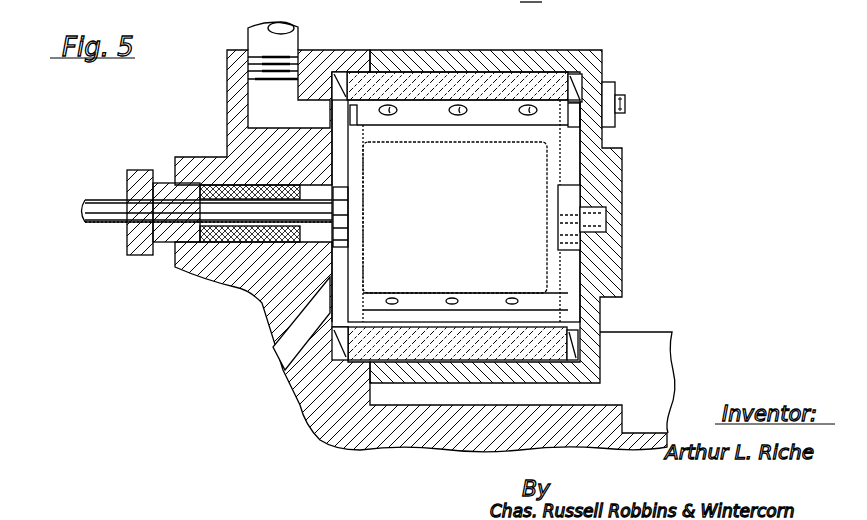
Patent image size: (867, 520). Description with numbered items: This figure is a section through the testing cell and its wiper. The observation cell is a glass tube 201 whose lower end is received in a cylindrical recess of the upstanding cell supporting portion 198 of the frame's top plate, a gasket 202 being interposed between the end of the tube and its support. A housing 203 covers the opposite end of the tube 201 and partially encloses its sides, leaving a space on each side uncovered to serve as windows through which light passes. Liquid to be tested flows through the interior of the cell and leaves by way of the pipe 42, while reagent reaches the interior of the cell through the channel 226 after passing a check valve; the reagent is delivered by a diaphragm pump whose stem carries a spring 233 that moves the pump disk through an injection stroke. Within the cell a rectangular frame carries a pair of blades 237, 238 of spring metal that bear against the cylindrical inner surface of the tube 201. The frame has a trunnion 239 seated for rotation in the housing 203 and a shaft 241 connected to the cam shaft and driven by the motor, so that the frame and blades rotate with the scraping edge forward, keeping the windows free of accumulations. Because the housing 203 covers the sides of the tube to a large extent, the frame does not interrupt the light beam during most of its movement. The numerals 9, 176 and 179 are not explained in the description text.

The section line 9- 9 is at (475, 38).
The pipe 42 is at (262, 30).
The frame 176 is at (464, 161).
The plate 179 is at (548, 8).
The cell supporting portion 198 is at (660, 347).
The glass tube 201 is at (533, 74).
The gasket 202 is at (335, 72).
The housing 203 is at (603, 55).
The channel 226 is at (274, 340).
The spring 233 is at (555, 160).
The blade 237 is at (627, 104).
The blade 238 is at (550, 335).
The trunnion 239 is at (617, 212).
The shaft 241 is at (98, 197).